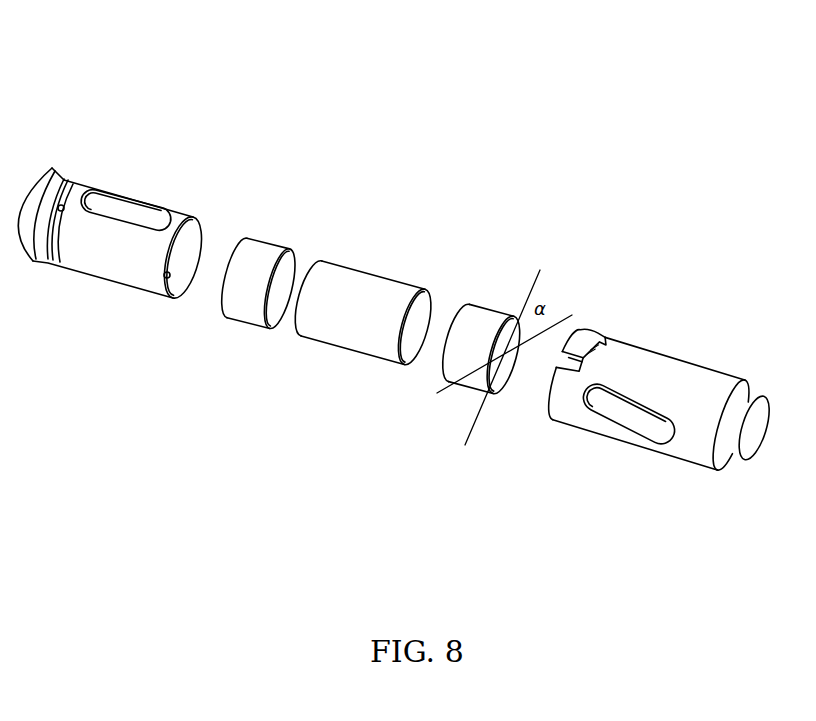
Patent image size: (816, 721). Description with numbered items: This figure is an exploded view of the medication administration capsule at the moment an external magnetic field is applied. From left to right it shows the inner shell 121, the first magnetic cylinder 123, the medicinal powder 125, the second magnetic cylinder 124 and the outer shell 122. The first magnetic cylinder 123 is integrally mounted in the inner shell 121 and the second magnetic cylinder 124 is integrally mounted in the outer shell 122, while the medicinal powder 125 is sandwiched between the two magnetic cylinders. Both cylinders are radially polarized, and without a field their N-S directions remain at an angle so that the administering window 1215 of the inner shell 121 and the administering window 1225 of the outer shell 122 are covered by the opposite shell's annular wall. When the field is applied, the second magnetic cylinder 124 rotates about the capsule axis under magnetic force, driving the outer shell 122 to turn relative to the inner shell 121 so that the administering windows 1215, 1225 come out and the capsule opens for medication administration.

The inner shell 121 is at (73, 202).
The administering window 1215 is at (120, 202).
The outer shell 122 is at (657, 375).
The administering window 1225 is at (627, 415).
The first magnetic cylinder 123 is at (262, 253).
The second magnetic cylinder 124 is at (482, 330).
The medicinal powder 125 is at (362, 307).